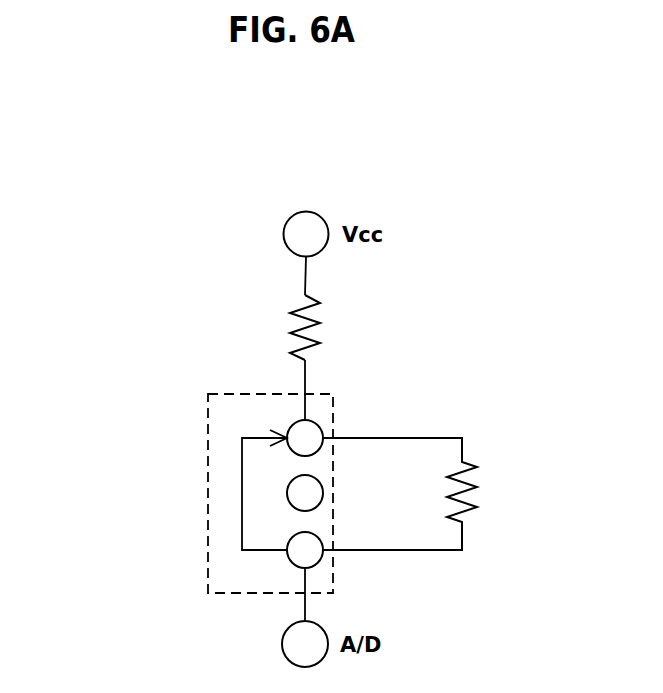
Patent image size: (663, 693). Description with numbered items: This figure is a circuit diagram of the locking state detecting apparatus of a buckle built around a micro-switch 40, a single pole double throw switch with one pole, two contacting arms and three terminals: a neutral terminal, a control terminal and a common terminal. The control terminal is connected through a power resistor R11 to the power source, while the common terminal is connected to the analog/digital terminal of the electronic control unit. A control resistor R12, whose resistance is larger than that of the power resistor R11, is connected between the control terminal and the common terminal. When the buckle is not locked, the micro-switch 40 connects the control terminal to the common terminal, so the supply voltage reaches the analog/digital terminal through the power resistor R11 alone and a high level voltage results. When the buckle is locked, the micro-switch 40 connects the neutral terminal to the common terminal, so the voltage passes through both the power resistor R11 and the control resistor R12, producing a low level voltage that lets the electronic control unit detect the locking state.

The micro-switch 40 is at (208, 566).
The power resistor R11 is at (332, 327).
The control resistor R12 is at (430, 494).